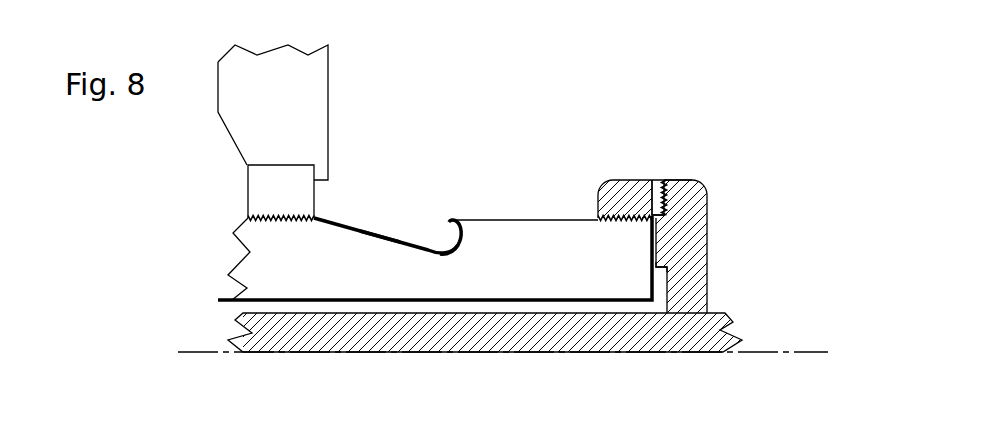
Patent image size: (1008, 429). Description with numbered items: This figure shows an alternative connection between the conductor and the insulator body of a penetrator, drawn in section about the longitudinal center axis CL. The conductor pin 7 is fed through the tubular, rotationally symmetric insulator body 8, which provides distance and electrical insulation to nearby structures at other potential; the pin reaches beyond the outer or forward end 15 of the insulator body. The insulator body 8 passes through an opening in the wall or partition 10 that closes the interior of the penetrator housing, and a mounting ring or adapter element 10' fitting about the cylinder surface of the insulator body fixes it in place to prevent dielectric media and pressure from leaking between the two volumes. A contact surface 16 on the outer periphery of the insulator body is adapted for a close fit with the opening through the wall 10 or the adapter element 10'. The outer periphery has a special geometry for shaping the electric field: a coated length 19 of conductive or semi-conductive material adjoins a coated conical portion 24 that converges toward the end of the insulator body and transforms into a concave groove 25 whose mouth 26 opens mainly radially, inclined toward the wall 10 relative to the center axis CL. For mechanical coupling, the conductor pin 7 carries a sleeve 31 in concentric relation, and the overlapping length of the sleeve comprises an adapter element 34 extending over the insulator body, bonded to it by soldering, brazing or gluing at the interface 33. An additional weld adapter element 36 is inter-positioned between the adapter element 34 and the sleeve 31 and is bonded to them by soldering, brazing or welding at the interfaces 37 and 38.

The conductor pin 7 is at (240, 333).
The insulator body 8 is at (595, 277).
The wall or partition 10 is at (303, 112).
The adapter element 10' is at (320, 191).
The outer or forward end 15 is at (658, 267).
The contact surface 16 is at (273, 215).
The coated length or surface 19 is at (378, 232).
The coated conical portion 24 is at (362, 235).
The concave recess or groove 25 is at (455, 252).
The mouth of the groove 26 is at (435, 233).
The sleeve 31 is at (708, 222).
The interface between insulator body and adapter element 33 is at (591, 218).
The adapter element 34 is at (605, 188).
The additional adapter element 36 is at (663, 180).
The interface 37 is at (652, 180).
The interface 38 is at (665, 182).
The longitudinal center axis CL is at (800, 352).